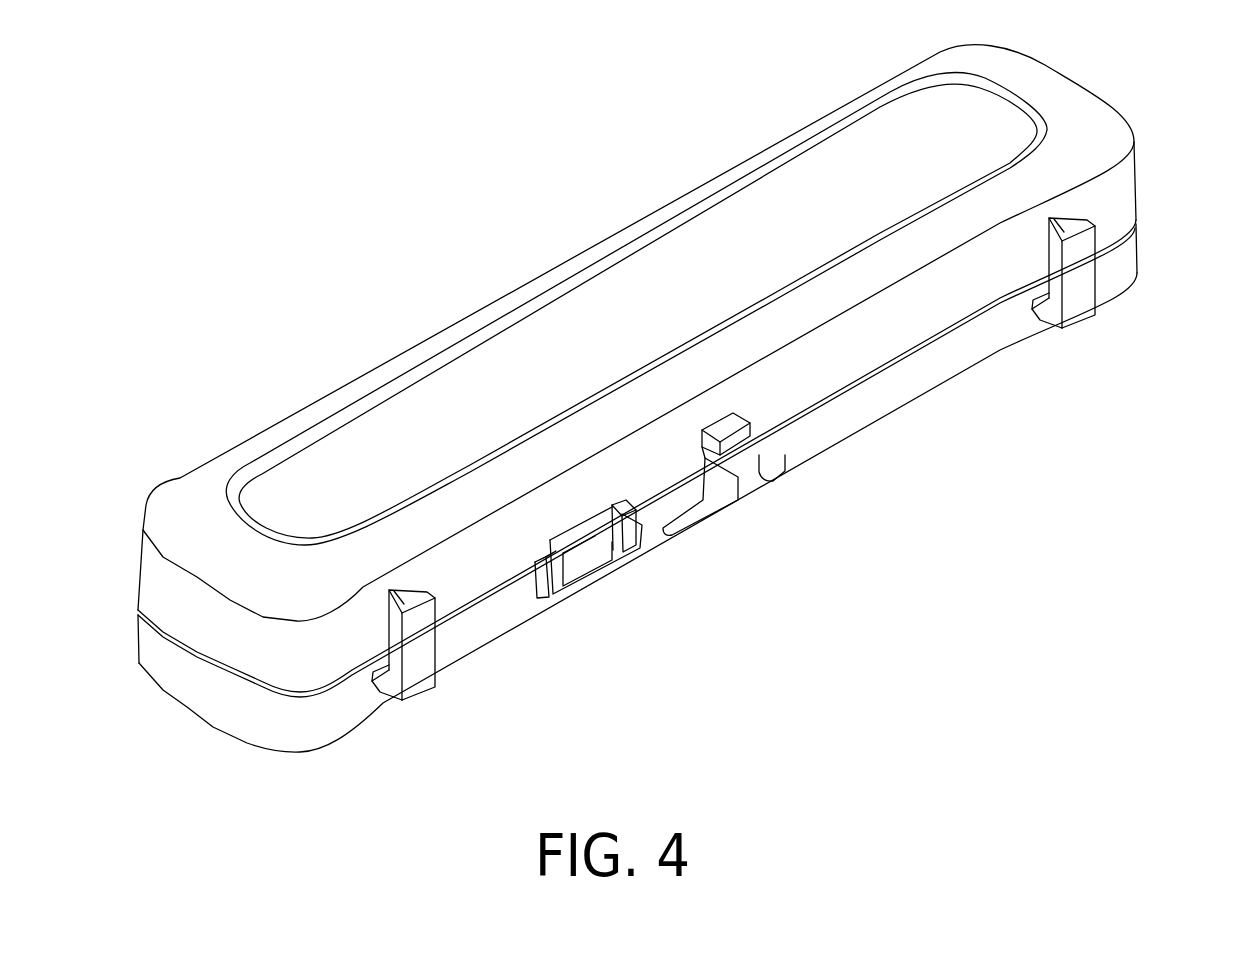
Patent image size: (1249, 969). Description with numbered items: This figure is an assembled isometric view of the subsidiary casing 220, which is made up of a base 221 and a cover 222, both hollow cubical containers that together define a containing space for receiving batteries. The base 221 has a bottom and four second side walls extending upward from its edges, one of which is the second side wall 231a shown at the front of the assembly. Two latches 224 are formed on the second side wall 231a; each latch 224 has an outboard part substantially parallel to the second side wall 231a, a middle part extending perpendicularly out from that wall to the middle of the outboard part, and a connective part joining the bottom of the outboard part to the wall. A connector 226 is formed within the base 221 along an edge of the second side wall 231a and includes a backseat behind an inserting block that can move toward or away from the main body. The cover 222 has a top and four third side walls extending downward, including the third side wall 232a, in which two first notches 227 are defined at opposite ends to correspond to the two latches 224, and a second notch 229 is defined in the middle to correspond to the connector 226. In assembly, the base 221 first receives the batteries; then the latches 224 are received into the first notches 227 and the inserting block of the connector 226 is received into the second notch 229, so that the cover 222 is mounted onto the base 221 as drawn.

The subsidiary casing 220 is at (534, 150).
The base 221 is at (218, 690).
The cover 222 is at (1067, 112).
The latch 224 is at (1072, 283).
The connector 226 is at (733, 440).
The first notch 227 is at (1043, 228).
The second notch 229 is at (703, 447).
The second side wall 231a is at (513, 597).
The third side wall 232a is at (472, 560).